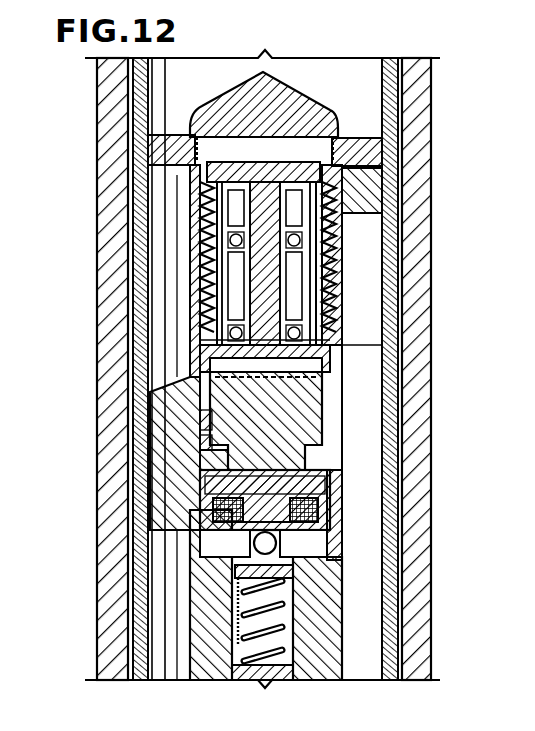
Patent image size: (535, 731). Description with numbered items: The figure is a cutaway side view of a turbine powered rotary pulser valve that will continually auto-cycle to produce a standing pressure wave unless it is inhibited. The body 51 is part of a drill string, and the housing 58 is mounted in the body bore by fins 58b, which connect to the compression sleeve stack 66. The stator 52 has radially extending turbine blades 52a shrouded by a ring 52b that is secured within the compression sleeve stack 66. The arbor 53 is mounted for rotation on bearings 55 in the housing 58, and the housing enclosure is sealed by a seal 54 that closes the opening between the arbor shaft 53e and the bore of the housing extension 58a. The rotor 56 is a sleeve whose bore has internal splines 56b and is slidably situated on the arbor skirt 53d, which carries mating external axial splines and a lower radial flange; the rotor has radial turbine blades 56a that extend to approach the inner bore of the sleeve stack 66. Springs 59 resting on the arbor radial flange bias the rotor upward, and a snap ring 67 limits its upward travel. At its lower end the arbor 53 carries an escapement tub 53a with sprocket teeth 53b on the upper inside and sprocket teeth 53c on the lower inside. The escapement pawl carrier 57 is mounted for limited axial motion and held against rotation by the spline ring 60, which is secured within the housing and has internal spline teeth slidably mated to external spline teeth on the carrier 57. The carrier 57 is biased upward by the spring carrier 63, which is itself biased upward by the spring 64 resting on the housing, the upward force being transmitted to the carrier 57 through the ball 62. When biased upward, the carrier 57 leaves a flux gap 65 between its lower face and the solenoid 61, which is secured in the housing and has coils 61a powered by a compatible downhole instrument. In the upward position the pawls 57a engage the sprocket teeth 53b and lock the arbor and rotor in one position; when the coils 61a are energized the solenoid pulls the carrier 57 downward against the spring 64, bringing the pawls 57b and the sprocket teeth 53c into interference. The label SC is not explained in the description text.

The body 51 is at (432, 97).
The stator 52 is at (202, 102).
The turbine blades 52a is at (177, 152).
The ring 52b is at (385, 152).
The arbor 53 is at (298, 158).
The escapement tub 53a is at (332, 372).
The sprocket teeth 53b is at (195, 338).
The sprocket teeth 53c is at (206, 414).
The arbor skirt 53d is at (340, 318).
The arbor shaft 53e is at (342, 277).
The seal 54 is at (312, 222).
The bearings 55 is at (308, 240).
The rotor 56 is at (189, 233).
The turbine blades 56a is at (190, 203).
The internal splines 56b is at (200, 257).
The escapement pawl carrier 57 is at (219, 467).
The pawls 57a is at (215, 358).
The pawls 57b is at (205, 404).
The housing 58 is at (343, 347).
The housing extension 58a is at (208, 283).
The fins 58b is at (200, 497).
The springs 59 is at (200, 305).
The spline ring 60 is at (340, 445).
The solenoid 61 is at (335, 497).
The coils 61a is at (343, 503).
The ball 62 is at (254, 547).
The spring carrier 63 is at (236, 600).
The spring 64 is at (238, 620).
The flux gap 65 is at (340, 483).
The compression sleeve stack 66 is at (398, 193).
The snap ring 67 is at (203, 167).
The sensor cable SC is at (342, 538).